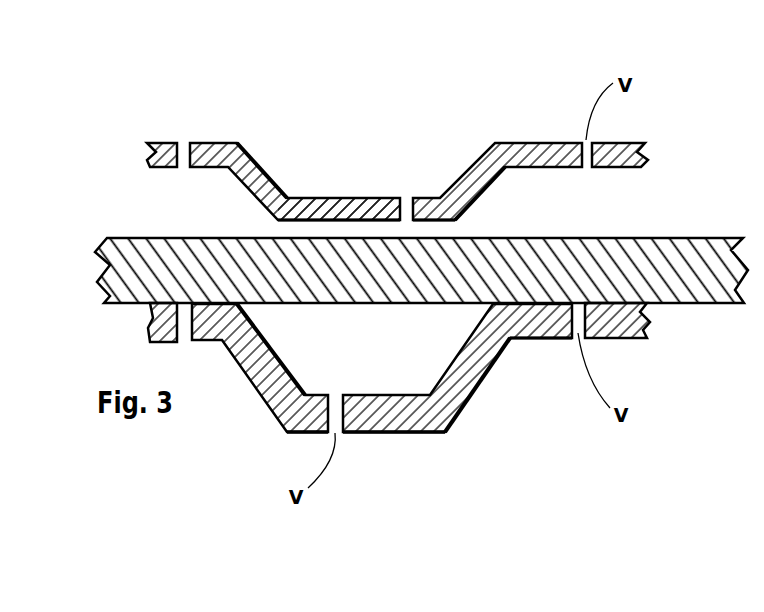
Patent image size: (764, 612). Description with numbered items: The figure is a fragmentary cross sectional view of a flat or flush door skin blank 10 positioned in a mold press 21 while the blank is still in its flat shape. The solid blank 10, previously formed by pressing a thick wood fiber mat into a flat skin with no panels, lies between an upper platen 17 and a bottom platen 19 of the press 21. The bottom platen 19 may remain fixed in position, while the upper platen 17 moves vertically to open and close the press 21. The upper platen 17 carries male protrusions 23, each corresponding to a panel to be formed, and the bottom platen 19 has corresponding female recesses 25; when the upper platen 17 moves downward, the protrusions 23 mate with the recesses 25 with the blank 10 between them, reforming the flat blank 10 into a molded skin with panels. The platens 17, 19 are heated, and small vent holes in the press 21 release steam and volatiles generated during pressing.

The blank skin 10 is at (668, 262).
The upper platen 17 is at (200, 150).
The bottom platen 19 is at (258, 363).
The mold press 21 is at (523, 107).
The male protrusion 23 is at (375, 198).
The female recess 25 is at (412, 363).